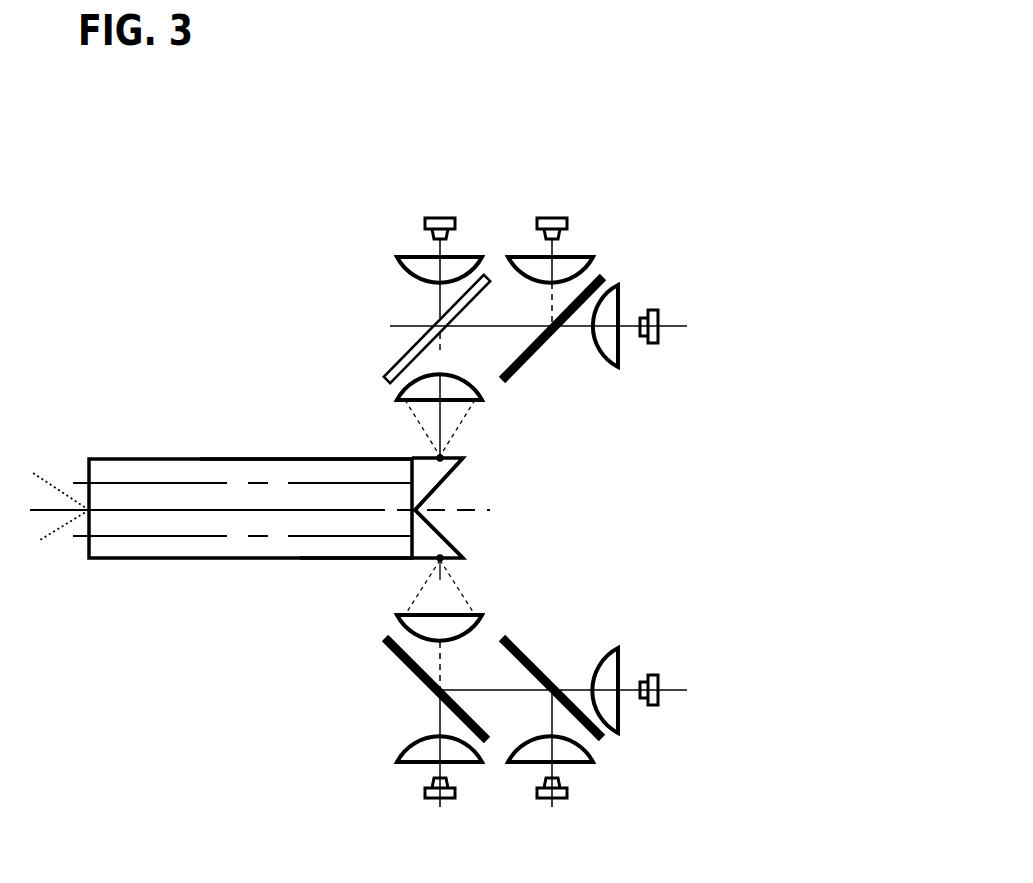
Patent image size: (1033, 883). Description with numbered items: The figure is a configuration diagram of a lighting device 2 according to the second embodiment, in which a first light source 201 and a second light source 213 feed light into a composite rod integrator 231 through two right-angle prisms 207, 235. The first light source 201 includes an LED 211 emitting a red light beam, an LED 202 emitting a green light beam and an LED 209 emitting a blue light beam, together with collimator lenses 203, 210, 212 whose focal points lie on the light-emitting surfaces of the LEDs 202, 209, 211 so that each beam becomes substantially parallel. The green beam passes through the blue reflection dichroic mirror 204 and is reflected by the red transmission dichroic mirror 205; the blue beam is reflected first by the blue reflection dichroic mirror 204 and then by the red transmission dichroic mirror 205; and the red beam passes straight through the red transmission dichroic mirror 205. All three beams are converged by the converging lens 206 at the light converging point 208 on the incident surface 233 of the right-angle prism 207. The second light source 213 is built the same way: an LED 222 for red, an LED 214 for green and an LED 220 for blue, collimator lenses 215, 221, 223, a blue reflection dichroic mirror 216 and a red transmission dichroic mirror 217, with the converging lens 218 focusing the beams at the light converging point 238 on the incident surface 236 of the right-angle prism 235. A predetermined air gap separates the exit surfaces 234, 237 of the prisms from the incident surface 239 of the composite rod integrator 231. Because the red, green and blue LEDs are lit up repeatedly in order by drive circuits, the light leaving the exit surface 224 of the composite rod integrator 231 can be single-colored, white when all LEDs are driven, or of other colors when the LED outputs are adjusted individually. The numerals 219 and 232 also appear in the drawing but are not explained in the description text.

The lighting device 2 is at (160, 181).
The first light source 201 is at (743, 160).
The LED 202 is at (657, 310).
The collimator lens 203 is at (603, 278).
The blue reflection dichroic mirror 204 is at (603, 365).
The red transmission dichroic mirror 205 is at (423, 335).
The converging lens 206 is at (397, 396).
The right-angle prism 207 is at (460, 465).
The light converging point 208 is at (445, 455).
The LED 209 is at (565, 222).
The collimator lens 210 is at (593, 258).
The LED 211 is at (425, 222).
The collimator lens 212 is at (397, 258).
The second light source 213 is at (745, 583).
The LED 214 is at (657, 705).
The collimator lens 215 is at (620, 725).
The blue reflection dichroic mirror 216 is at (527, 658).
The red transmission dichroic mirror 217 is at (397, 658).
The converging lens 218 is at (397, 616).
The prism 219 is at (455, 477).
The LED 220 is at (565, 800).
The collimator lens 221 is at (593, 765).
The LED 222 is at (425, 792).
The collimator lens 223 is at (397, 748).
The exit surface 224 is at (89, 550).
The composite rod integrator 231 is at (185, 523).
The upper surface of light guide 232 is at (440, 456).
The incident surface 233 is at (412, 457).
The exit surface 234 is at (412, 481).
The right-angle prism 235 is at (445, 560).
The incident surface 236 is at (412, 557).
The exit surface 237 is at (452, 548).
The light converging point 238 is at (435, 562).
The incident surface 239 is at (410, 532).